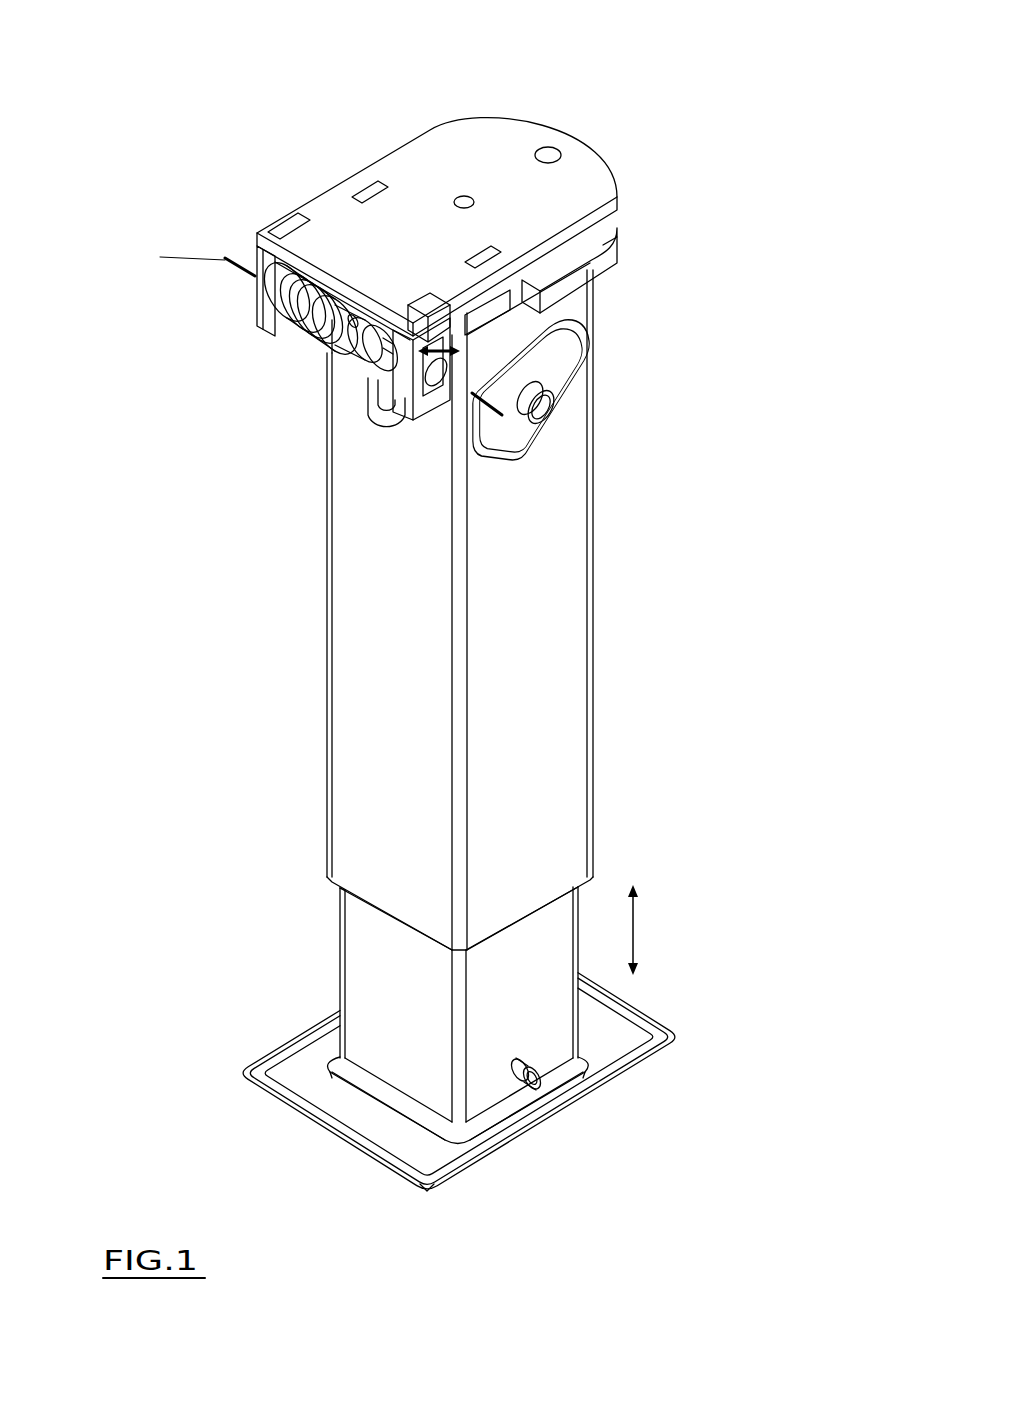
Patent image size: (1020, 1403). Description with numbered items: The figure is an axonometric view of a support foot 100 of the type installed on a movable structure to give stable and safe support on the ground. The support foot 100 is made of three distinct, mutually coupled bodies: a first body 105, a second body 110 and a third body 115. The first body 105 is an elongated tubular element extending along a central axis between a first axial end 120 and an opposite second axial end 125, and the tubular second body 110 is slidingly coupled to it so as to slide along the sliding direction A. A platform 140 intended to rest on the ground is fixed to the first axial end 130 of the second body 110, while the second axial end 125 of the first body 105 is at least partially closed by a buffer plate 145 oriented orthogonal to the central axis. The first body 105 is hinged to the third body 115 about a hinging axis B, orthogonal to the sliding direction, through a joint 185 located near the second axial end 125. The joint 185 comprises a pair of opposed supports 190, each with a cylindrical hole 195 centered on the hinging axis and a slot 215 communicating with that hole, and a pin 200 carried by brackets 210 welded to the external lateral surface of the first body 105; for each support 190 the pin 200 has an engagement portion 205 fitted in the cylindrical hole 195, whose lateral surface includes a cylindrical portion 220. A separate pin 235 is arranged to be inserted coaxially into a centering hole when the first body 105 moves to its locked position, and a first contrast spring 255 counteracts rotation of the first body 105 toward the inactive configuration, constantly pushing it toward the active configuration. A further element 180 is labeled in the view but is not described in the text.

The support foot 100 is at (268, 136).
The first body 105 is at (548, 752).
The second body 110 is at (545, 978).
The third body 115 is at (600, 196).
The first axial end 120 is at (342, 903).
The second axial end 125 is at (561, 263).
The first axial end 130 is at (530, 1154).
The platform 140 is at (390, 1138).
The buffer plate 145 is at (613, 267).
The top plate surface 180 is at (411, 200).
The joint 185 is at (305, 352).
The support 190 is at (265, 293).
The cylindrical hole 195 is at (556, 416).
The pin 200 is at (340, 330).
The engagement portion 205 is at (435, 385).
The bracket 210 is at (276, 352).
The slot 215 is at (458, 352).
The cylindrical portion 220 is at (405, 318).
The pin 235 is at (556, 152).
The first contrast spring 255 is at (257, 248).